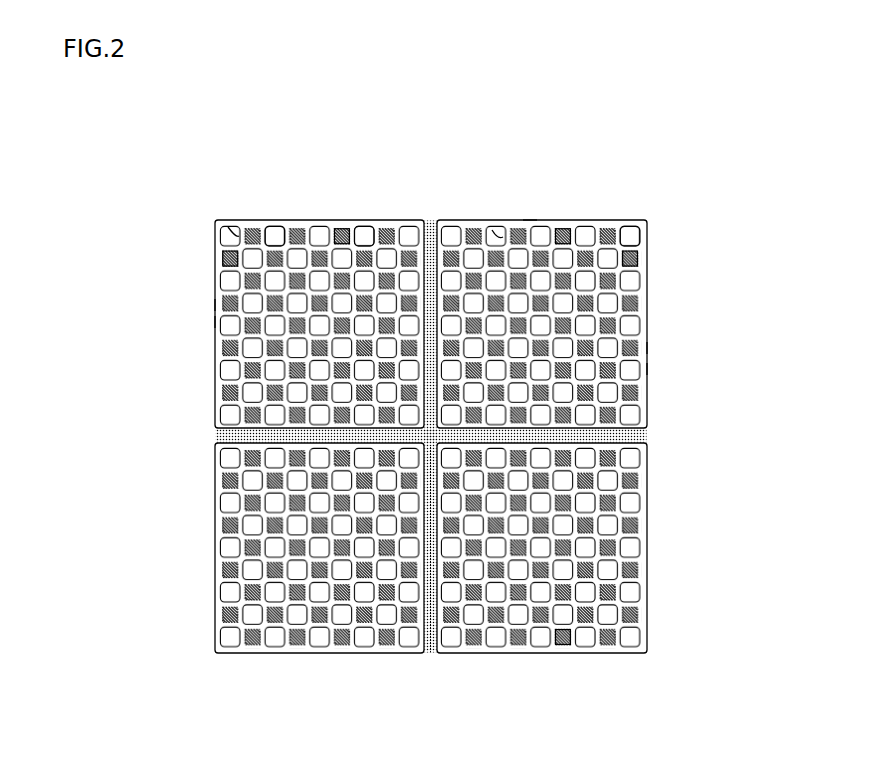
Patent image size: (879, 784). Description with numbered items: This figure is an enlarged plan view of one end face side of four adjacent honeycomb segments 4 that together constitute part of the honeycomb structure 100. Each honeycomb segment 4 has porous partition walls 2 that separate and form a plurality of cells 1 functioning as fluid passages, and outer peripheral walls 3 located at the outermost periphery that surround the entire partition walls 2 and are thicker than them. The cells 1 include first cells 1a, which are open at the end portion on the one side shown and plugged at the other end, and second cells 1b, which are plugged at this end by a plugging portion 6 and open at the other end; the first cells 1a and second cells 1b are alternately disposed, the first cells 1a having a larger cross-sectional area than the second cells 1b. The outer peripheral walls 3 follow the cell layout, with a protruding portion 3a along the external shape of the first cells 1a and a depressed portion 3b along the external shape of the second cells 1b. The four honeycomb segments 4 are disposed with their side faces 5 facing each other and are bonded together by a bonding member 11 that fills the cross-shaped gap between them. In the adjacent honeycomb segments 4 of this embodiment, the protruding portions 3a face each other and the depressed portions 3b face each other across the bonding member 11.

The honeycomb structure 100 is at (790, 79).
The cells 1 is at (276, 236).
The first cells 1a is at (367, 236).
The second cells 1b is at (636, 258).
The partition walls 2 is at (228, 227).
The outer peripheral walls 3 is at (322, 221).
The protruding portion 3a is at (215, 322).
The depressed portion 3b is at (215, 305).
The honeycomb segments 4 is at (632, 222).
The side faces 5 is at (530, 222).
The plugging portion 6 is at (565, 235).
The bonding member 11 is at (428, 228).